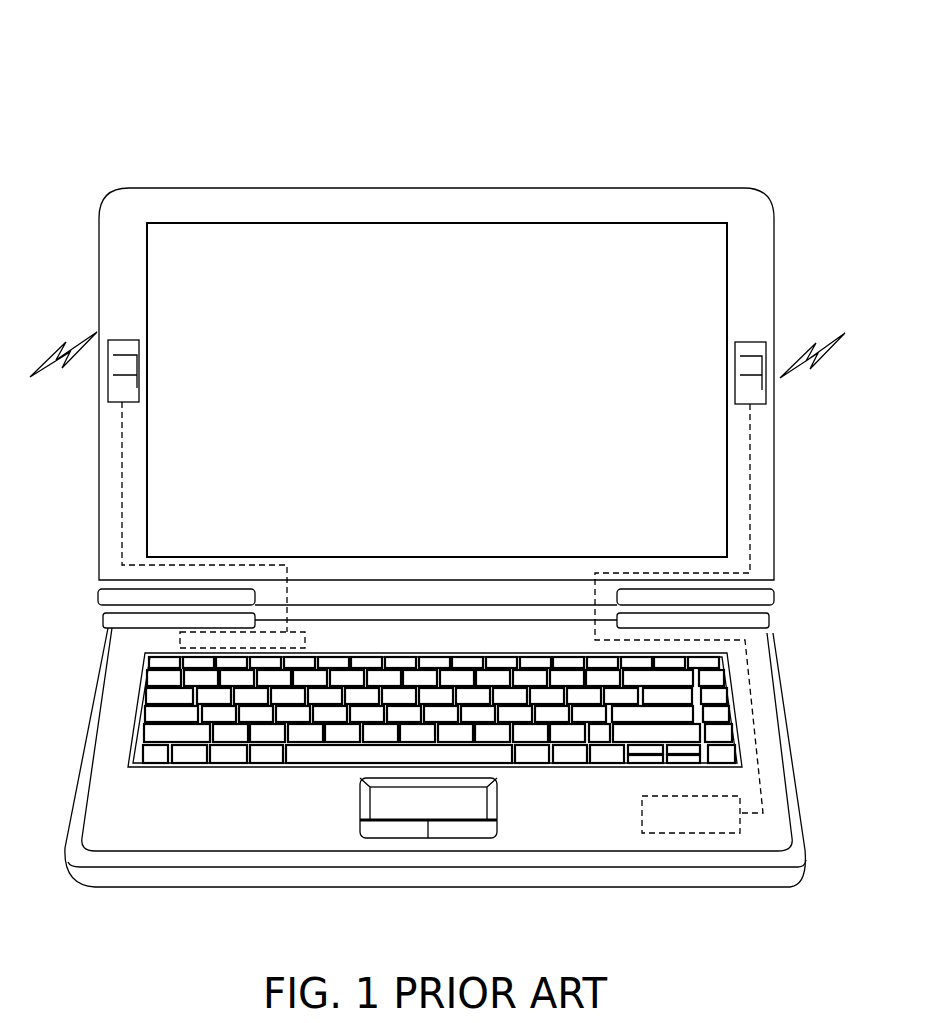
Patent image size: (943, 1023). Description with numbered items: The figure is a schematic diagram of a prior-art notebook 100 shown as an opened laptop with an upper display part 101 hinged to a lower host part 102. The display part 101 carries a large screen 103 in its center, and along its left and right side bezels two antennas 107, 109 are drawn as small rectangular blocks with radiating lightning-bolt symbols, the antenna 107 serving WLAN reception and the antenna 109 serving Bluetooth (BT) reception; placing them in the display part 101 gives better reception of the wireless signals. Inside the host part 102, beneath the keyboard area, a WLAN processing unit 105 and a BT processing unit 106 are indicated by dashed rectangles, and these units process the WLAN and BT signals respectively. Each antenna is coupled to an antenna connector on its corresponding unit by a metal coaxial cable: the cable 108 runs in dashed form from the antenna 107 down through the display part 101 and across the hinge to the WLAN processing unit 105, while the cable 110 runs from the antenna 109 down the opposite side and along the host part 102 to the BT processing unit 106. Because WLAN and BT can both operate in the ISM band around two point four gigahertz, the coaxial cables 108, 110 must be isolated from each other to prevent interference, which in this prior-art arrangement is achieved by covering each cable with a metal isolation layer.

The notebook 100 is at (728, 126).
The display part 101 is at (212, 188).
The host part 102 is at (783, 690).
The display screen 103 is at (600, 223).
The WLAN processing unit 105 is at (190, 640).
The BT processing unit 106 is at (697, 815).
The antenna 107 is at (122, 340).
The metal coaxial cable 108 is at (122, 495).
The antenna 109 is at (750, 342).
The metal coaxial cable 110 is at (750, 494).